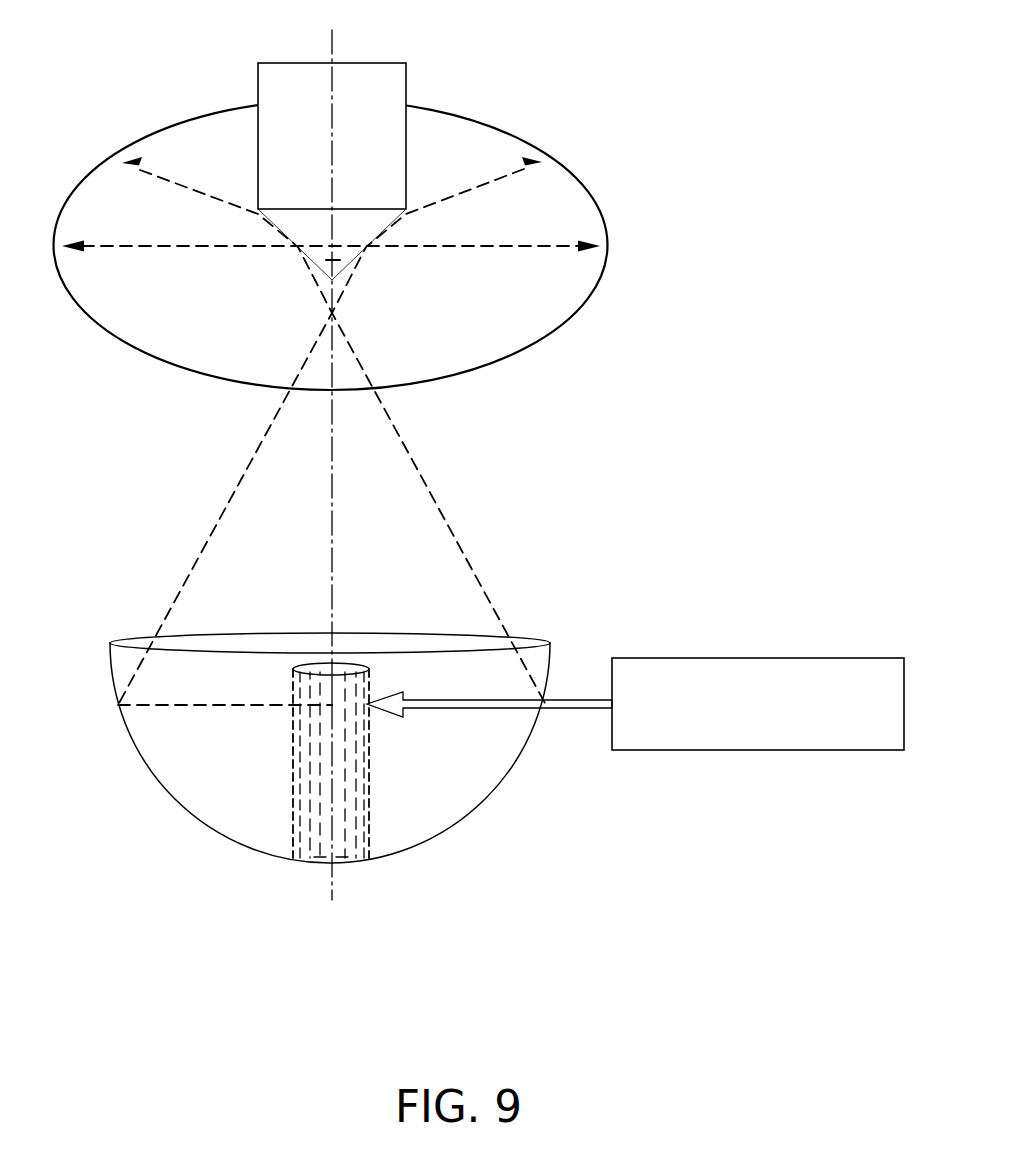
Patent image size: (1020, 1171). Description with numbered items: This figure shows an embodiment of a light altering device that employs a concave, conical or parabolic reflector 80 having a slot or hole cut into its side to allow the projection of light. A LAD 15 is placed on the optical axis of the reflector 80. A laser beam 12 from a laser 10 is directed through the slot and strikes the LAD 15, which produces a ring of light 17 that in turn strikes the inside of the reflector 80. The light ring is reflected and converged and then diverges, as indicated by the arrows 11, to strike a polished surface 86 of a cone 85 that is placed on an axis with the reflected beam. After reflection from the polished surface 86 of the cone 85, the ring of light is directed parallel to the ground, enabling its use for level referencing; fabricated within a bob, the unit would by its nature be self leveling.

The laser 10 is at (757, 657).
The arrows 11 is at (222, 200).
The laser beam 12 is at (508, 712).
The LAD 15 is at (293, 808).
The ring of light 17 is at (500, 362).
The reflector 80 is at (407, 848).
The cone 85 is at (372, 62).
The polished surface 86 is at (382, 232).